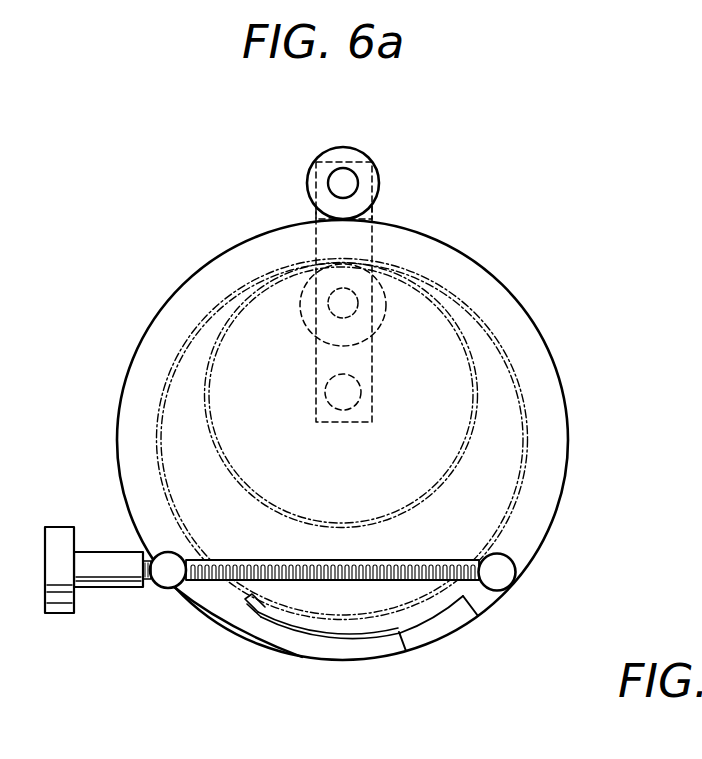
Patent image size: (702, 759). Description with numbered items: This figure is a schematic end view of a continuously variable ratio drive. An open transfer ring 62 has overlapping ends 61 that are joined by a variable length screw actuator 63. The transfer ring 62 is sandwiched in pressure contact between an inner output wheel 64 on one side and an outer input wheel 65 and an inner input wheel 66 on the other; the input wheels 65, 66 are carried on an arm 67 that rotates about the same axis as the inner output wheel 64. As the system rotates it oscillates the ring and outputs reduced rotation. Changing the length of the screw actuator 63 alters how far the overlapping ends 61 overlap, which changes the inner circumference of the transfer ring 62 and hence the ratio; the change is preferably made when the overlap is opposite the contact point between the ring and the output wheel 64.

In FIG. 6a, the overlapping ends 61 is at (250, 618).
In FIG. 6a, the open transfer ring 62 is at (560, 443).
In FIG. 6a, the variable length screw actuator 63 is at (330, 579).
In FIG. 6a, the inner output wheel 64 is at (463, 378).
In FIG. 6a, the outer input wheel 65 is at (364, 156).
In FIG. 6b, the outer input wheel 65 is at (636, 758).
In FIG. 6a, the inner input wheel 66 is at (378, 295).
In FIG. 6a, the arm 67 is at (374, 213).